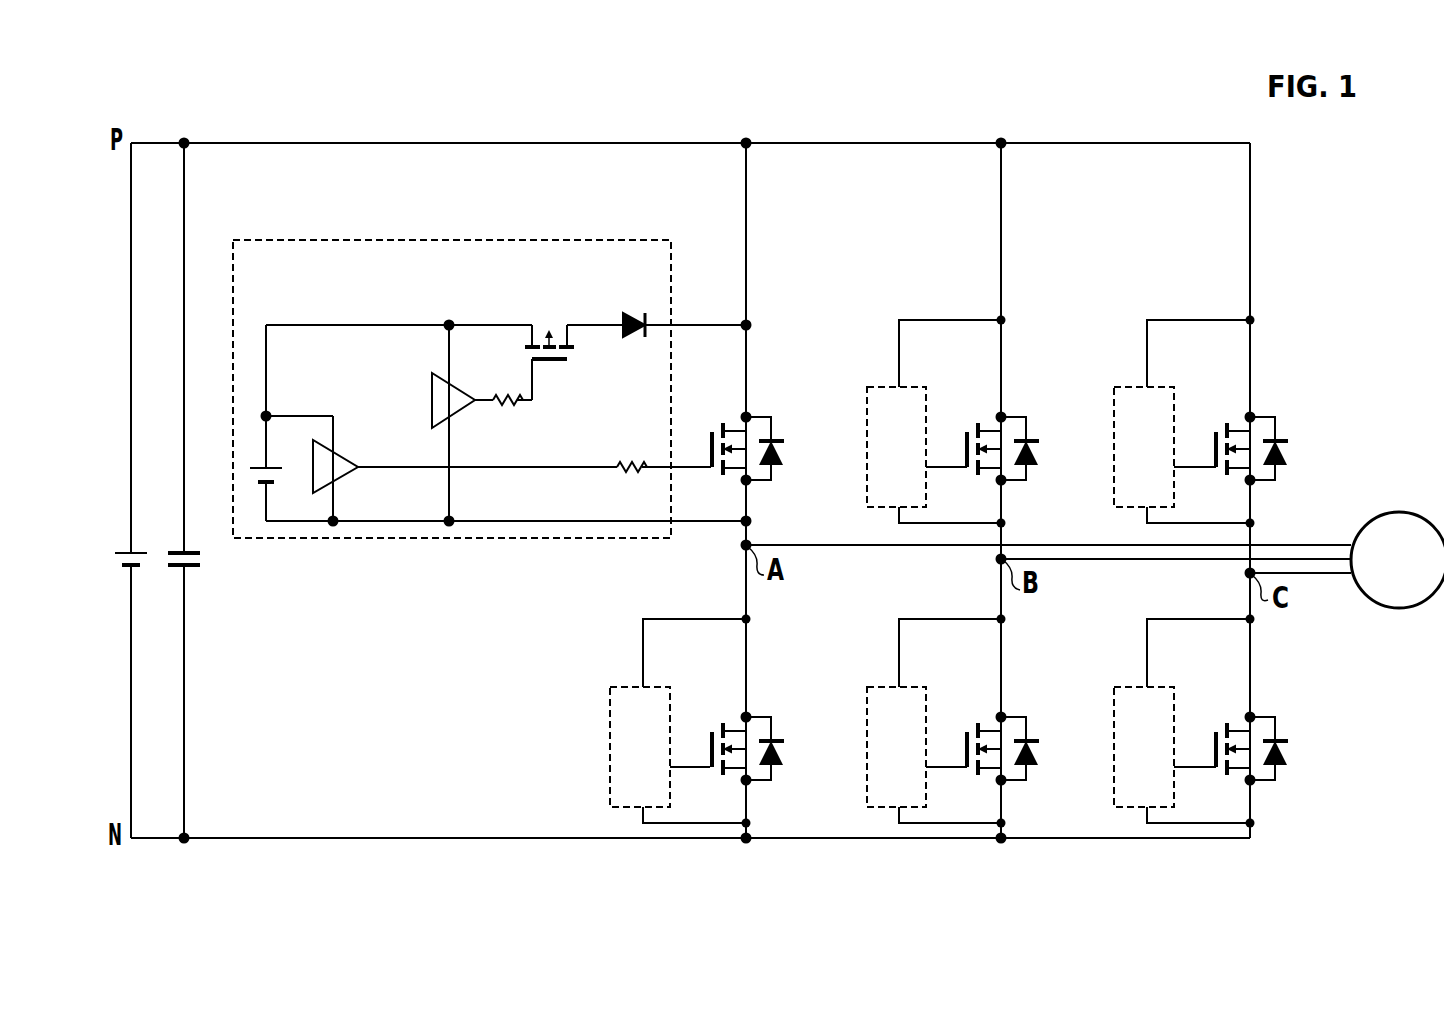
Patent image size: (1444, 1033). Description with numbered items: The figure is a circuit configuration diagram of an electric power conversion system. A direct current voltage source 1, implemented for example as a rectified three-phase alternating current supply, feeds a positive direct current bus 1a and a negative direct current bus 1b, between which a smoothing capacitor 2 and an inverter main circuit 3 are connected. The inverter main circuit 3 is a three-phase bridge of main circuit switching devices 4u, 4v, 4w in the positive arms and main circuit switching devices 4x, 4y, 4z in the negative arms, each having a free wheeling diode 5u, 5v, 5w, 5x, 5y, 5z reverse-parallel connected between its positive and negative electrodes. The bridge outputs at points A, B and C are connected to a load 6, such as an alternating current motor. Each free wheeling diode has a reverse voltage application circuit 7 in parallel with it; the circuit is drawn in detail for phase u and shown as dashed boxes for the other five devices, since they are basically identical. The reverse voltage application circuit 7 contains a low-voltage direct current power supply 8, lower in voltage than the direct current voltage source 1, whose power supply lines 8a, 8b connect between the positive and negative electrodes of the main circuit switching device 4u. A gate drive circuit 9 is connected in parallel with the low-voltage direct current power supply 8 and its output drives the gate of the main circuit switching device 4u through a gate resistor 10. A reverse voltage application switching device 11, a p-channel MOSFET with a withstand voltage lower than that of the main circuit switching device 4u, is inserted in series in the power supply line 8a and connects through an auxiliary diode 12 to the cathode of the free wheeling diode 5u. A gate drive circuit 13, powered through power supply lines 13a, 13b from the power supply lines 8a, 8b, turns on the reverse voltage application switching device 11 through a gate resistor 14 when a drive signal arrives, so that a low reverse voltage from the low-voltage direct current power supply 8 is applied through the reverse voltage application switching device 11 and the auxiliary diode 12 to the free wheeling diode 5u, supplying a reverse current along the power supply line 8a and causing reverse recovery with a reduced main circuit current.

The direct current voltage source 1 is at (123, 552).
The positive direct current bus 1a is at (355, 143).
The negative direct current bus 1b is at (343, 838).
The smoothing capacitor 2 is at (175, 552).
The inverter main circuit 3 is at (982, 126).
The main circuit switching device 4u is at (712, 430).
The main circuit switching device 4v is at (967, 430).
The main circuit switching device 4w is at (1216, 430).
The main circuit switching device 4x is at (710, 730).
The main circuit switching device 4y is at (967, 730).
The main circuit switching device 4z is at (1216, 730).
The free wheeling diode 5u is at (775, 440).
The free wheeling diode 5v is at (1030, 440).
The free wheeling diode 5w is at (1279, 440).
The free wheeling diode 5x is at (777, 741).
The free wheeling diode 5y is at (1030, 741).
The free wheeling diode 5z is at (1279, 741).
The load 6 is at (1405, 512).
The reverse voltage application circuit 7 is at (513, 240).
The low-voltage direct current power supply 8 is at (254, 468).
The power supply line 8a is at (697, 323).
The power supply line 8b is at (706, 525).
The gate drive circuit 9 is at (348, 450).
The gate resistor 10 is at (629, 462).
The reverse voltage application switching device 11 is at (562, 328).
The auxiliary diode 12 is at (635, 313).
The gate drive circuit 13 is at (460, 418).
The power supply line 13a is at (447, 348).
The power supply line 13b is at (452, 490).
The gate resistor 14 is at (508, 402).